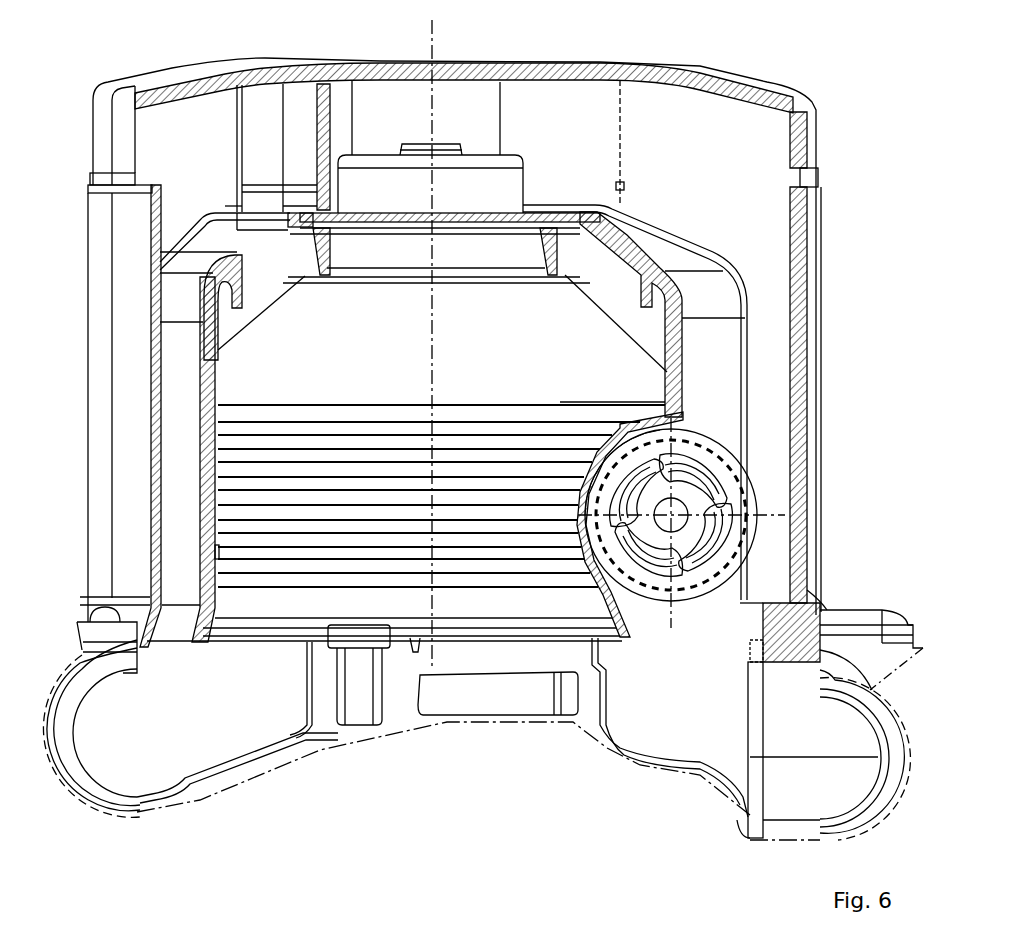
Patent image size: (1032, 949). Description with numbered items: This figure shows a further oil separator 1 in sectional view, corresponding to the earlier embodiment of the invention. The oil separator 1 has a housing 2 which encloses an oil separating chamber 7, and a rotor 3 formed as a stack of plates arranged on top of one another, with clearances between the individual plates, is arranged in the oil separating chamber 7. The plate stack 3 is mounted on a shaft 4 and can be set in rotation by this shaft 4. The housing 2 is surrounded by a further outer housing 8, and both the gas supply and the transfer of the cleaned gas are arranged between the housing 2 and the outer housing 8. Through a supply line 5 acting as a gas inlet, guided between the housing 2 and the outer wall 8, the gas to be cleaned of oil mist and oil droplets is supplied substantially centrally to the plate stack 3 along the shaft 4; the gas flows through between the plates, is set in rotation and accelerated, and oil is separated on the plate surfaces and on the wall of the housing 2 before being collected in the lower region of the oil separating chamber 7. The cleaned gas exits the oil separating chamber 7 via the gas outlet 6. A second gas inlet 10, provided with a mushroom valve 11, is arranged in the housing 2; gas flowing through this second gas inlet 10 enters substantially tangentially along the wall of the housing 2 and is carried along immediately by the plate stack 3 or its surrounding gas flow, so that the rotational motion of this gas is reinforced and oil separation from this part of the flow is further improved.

The oil separator 1 is at (856, 242).
The housing 2 is at (660, 250).
The rotor (plate stack) 3 is at (429, 455).
The shaft 4 is at (436, 150).
The supply line 5 is at (677, 145).
The gas outlet 6 is at (237, 247).
The oil separating chamber 7 is at (238, 300).
The outer housing 8 is at (838, 356).
The second gas inlet 10 is at (683, 442).
The mushroom valve 11 is at (742, 479).